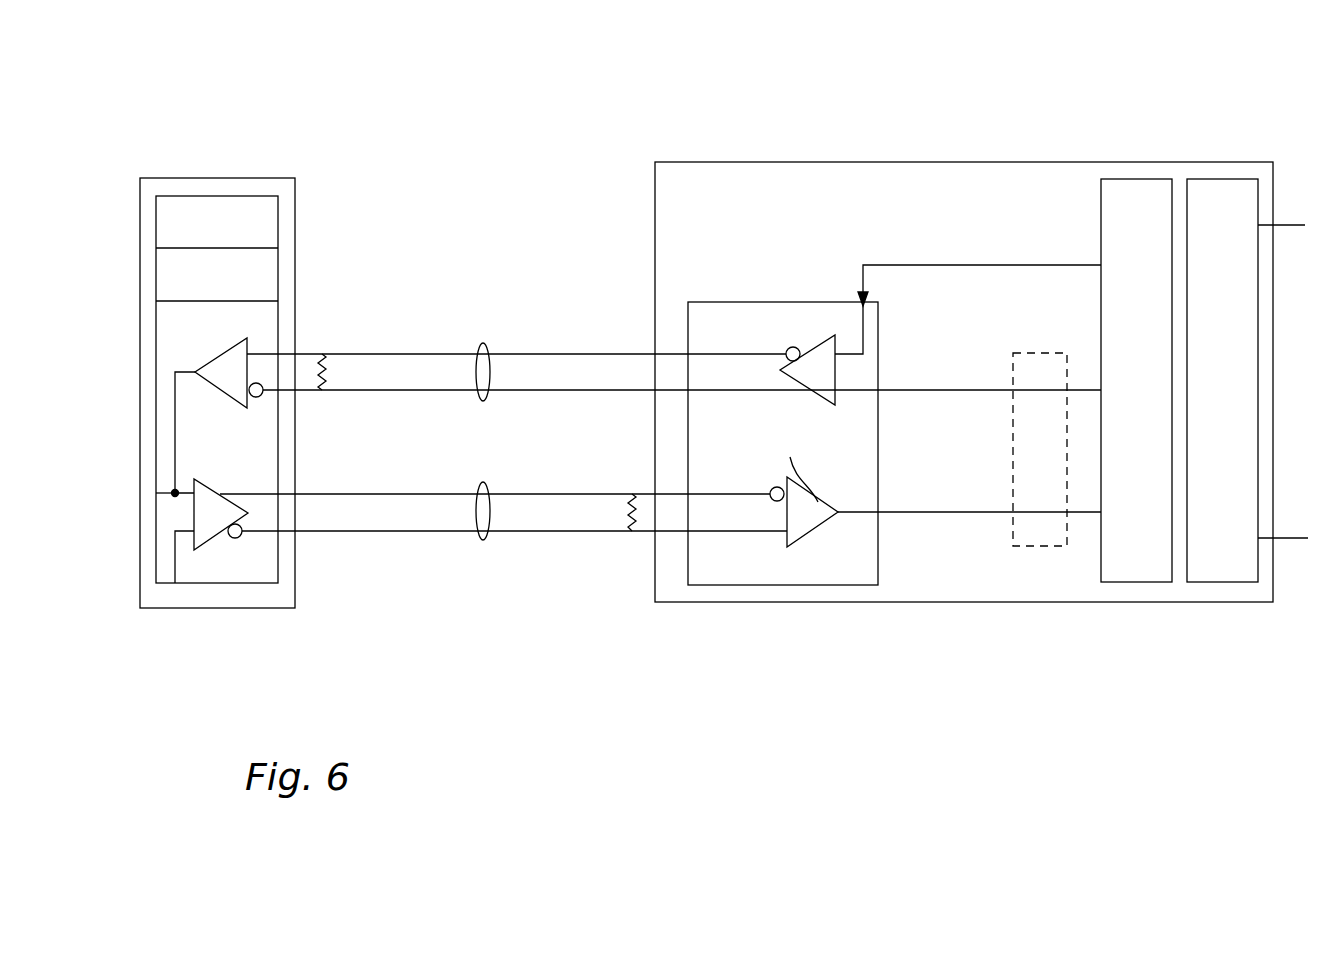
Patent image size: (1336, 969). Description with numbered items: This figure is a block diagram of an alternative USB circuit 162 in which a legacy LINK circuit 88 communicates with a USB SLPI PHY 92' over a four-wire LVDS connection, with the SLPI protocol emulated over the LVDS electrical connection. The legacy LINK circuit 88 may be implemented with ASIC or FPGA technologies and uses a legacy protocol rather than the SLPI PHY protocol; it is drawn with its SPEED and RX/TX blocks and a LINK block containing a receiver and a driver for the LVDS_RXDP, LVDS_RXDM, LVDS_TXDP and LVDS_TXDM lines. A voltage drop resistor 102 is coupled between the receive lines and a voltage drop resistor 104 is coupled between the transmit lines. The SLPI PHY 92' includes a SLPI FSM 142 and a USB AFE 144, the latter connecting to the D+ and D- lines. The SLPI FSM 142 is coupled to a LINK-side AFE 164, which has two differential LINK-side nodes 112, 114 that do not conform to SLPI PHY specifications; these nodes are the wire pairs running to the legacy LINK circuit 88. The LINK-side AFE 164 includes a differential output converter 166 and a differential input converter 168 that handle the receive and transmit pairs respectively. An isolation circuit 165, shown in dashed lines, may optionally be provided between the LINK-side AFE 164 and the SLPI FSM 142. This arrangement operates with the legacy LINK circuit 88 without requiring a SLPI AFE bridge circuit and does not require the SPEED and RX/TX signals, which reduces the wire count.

The legacy LINK circuit 88 is at (219, 163).
The USB circuit 162 is at (608, 86).
The USB SLPI PHY 92' is at (982, 405).
The LINK-side AFE 164 is at (768, 323).
The isolation circuit 165 is at (1047, 362).
The differential output converter 166 is at (823, 393).
The differential input converter 168 is at (822, 522).
The SLPI FSM 142 is at (1155, 570).
The USB AFE 144 is at (1240, 570).
The voltage drop resistor 102 is at (335, 382).
The voltage drop resistor 104 is at (615, 522).
The differential LINK-side node 112 is at (478, 403).
The differential LINK-side node 114 is at (478, 540).